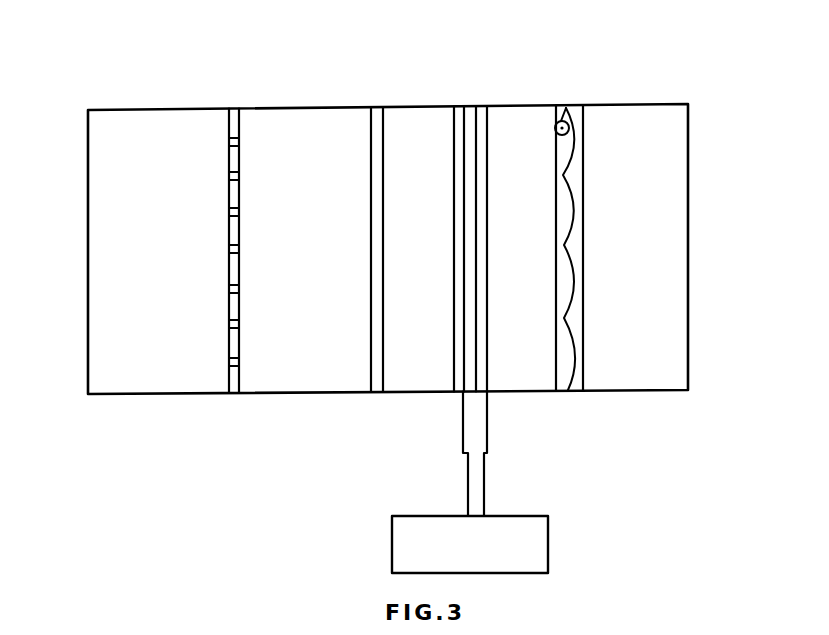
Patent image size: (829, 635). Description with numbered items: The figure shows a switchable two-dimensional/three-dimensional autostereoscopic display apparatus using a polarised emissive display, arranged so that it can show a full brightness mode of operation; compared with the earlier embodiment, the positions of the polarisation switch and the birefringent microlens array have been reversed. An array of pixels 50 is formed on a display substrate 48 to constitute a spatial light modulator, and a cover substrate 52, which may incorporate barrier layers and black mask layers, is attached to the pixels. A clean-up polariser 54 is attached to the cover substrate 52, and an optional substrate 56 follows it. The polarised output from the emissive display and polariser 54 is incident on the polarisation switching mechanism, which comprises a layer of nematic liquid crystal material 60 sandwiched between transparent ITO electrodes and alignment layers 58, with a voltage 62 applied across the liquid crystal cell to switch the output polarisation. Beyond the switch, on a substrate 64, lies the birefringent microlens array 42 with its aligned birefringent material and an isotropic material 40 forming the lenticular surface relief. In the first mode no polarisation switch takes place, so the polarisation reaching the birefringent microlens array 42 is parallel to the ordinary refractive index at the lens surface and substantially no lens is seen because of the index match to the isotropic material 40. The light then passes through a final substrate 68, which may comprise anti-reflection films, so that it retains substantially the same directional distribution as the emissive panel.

The isotropic material 40 is at (575, 393).
The birefringent microlens array 42 is at (566, 108).
The display substrate 48 is at (162, 393).
The array of pixels 50 is at (237, 393).
The cover substrate 52 is at (312, 393).
The polariser 54 is at (380, 393).
The substrate 56 is at (409, 393).
The ITO electrodes and alignment layer 58 is at (454, 107).
The nematic liquid crystal material 60 is at (464, 107).
The voltage 62 is at (470, 482).
The substrate 64 is at (526, 130).
The final substrate 68 is at (679, 117).